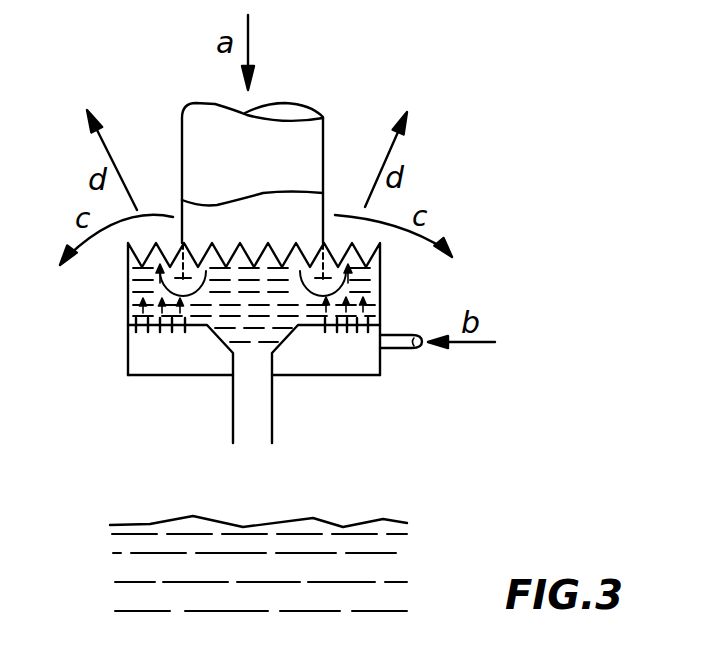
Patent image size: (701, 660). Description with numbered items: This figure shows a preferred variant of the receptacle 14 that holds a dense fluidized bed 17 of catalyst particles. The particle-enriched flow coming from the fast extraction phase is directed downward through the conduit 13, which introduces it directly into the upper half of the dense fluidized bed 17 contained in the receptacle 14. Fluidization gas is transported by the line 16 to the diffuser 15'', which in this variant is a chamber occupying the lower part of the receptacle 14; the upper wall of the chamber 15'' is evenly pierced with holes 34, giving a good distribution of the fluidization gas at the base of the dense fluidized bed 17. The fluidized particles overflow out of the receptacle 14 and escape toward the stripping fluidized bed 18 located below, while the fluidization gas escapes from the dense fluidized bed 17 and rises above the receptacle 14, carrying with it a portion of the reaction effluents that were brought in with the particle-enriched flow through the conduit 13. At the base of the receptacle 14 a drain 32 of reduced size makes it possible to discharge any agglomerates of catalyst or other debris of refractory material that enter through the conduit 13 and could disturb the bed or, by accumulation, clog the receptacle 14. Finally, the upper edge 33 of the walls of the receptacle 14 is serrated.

The conduit 13 is at (297, 150).
The receptacle 14 is at (128, 323).
The diffuser 15'' is at (364, 378).
The line 16 is at (405, 335).
The dense fluidized bed 17 is at (262, 312).
The stripping fluidized bed 18 is at (327, 547).
The drain 32 is at (235, 420).
The upper edge 33 is at (130, 234).
The holes 34 is at (180, 333).